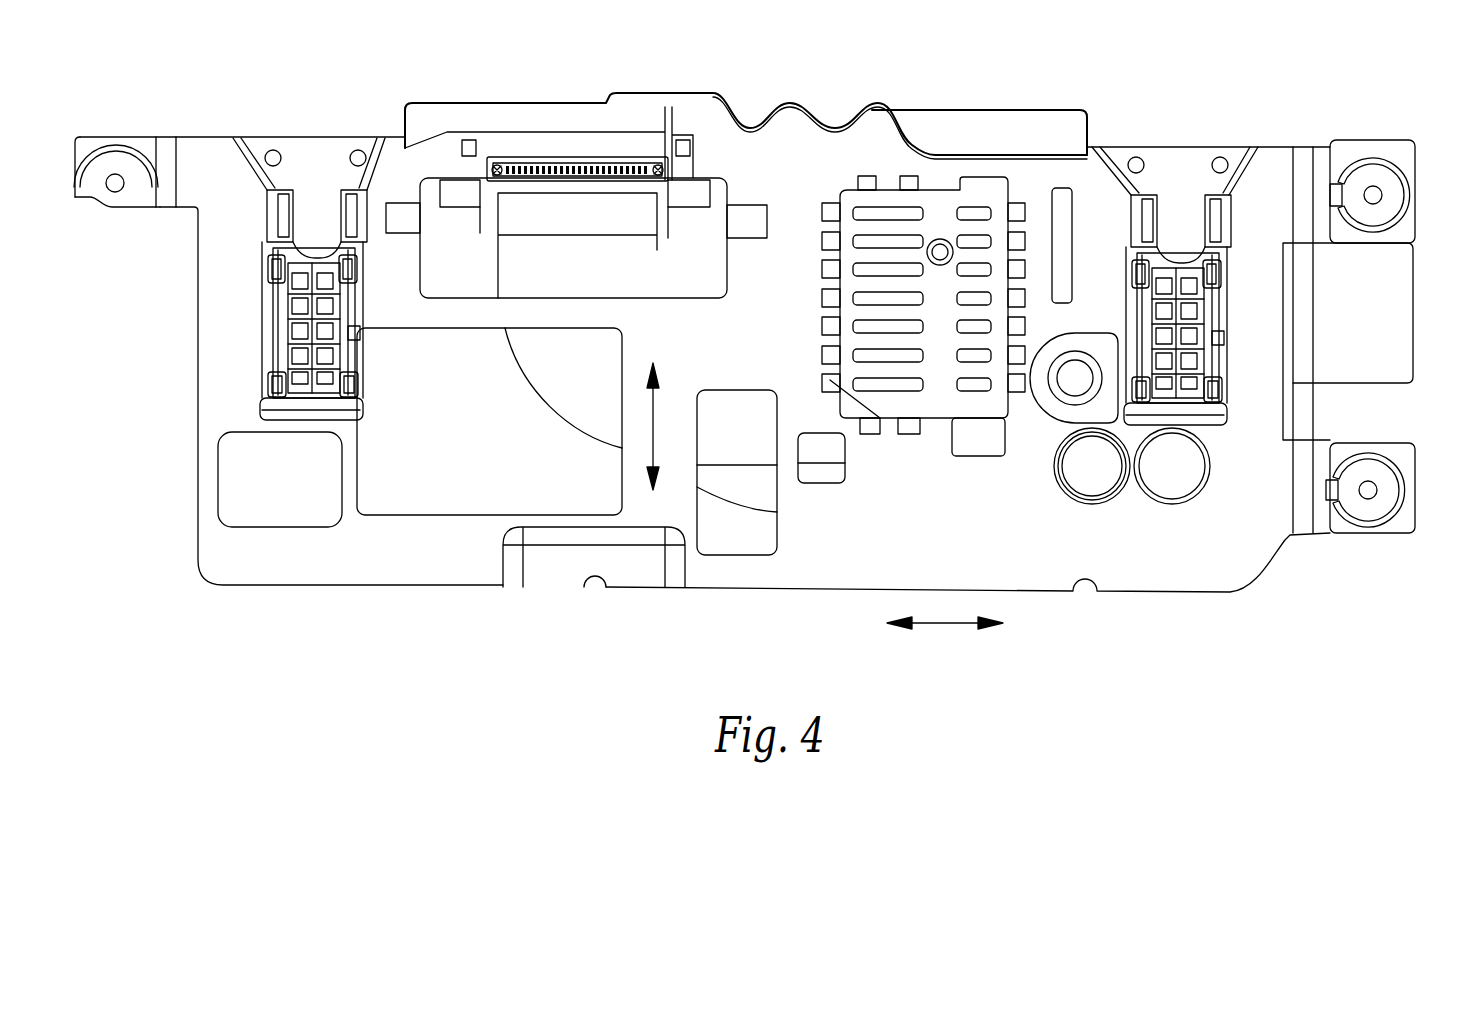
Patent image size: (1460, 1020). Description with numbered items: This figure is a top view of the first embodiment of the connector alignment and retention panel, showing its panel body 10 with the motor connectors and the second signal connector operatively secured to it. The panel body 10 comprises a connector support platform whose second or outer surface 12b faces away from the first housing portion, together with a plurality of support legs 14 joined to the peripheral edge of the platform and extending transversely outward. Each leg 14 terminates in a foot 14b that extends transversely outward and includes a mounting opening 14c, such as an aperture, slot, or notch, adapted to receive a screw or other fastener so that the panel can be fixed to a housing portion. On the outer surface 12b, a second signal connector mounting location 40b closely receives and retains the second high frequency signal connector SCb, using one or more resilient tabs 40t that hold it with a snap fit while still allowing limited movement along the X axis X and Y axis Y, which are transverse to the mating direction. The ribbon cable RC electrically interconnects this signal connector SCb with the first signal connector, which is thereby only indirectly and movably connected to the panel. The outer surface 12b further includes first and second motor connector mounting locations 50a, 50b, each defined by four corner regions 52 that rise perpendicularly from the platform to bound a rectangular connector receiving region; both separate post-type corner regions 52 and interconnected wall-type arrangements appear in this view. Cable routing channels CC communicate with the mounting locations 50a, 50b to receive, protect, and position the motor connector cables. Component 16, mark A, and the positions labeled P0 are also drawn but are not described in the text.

The panel body 10 is at (447, 585).
The second (outer) surface 12b is at (1048, 547).
The support leg 14 is at (167, 143).
The foot 14b is at (92, 138).
The mounting opening 14c is at (115, 185).
The electronic component 16 is at (944, 200).
The second signal connector mounting location 40b is at (660, 235).
The resilient tab 40t is at (463, 222).
The first motor connector mounting location 50a is at (272, 298).
The second motor connector mounting location 50b is at (1213, 260).
The corner region 52 is at (277, 247).
The mark A is at (574, 142).
The cable routing channel CC is at (308, 145).
The position P0 is at (358, 492).
The ribbon cable RC is at (585, 390).
The second high frequency signal connector SCb is at (573, 165).
The X axis X is at (942, 627).
The Y axis Y is at (655, 433).